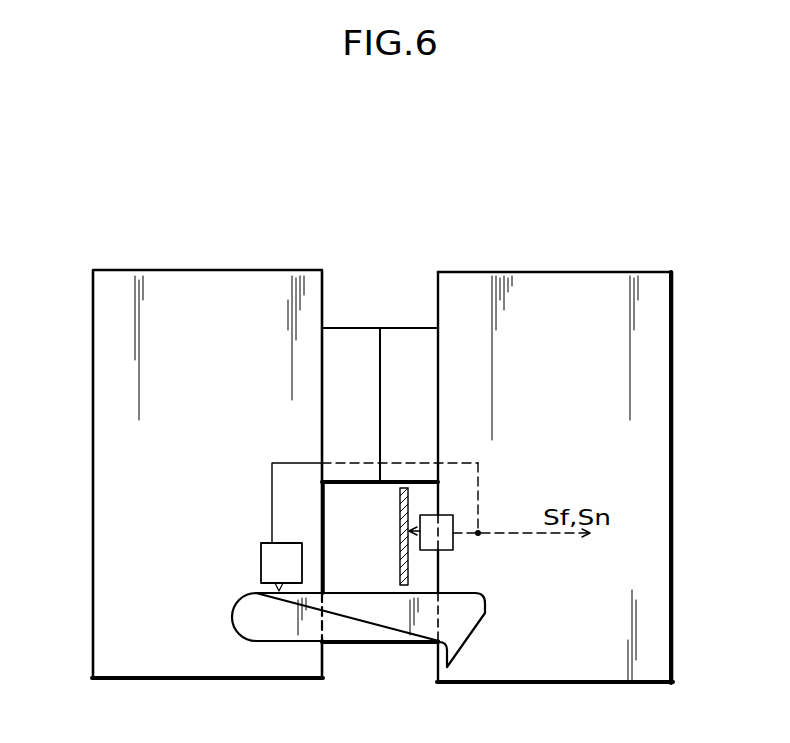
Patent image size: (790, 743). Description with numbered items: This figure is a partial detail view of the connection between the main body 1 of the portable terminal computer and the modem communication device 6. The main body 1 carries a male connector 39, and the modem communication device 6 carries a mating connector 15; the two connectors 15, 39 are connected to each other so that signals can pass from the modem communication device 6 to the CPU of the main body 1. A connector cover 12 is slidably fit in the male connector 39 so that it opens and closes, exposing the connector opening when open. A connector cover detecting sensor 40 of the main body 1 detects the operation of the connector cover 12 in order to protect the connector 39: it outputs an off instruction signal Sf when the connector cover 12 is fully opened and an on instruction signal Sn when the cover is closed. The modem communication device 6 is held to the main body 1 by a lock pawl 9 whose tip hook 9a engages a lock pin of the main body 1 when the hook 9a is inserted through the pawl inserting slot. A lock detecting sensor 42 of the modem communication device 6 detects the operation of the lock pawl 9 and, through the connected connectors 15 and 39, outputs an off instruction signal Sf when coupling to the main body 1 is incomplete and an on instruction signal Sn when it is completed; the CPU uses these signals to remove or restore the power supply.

The modem communication device 6 is at (205, 270).
The main body 1 is at (581, 270).
The male connector 39 is at (345, 338).
The connector 15 is at (408, 338).
The connector cover 12 is at (400, 565).
The connector cover detecting sensor 40 is at (453, 538).
The lock detecting sensor 42 is at (267, 562).
The lock pawl 9 is at (378, 623).
The tip hook 9a is at (466, 637).